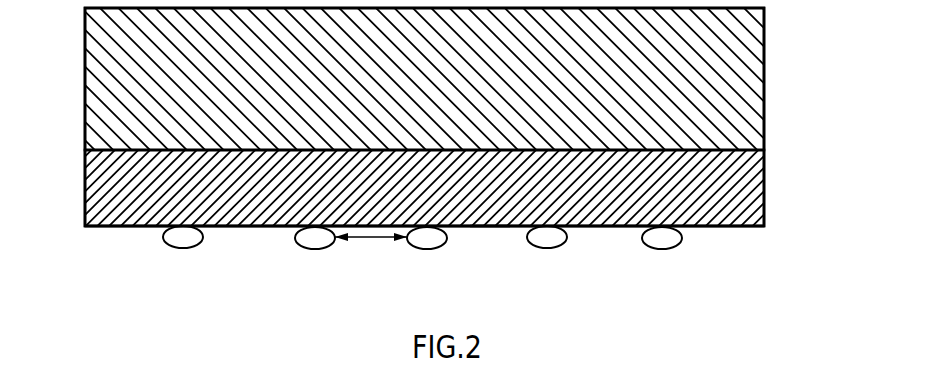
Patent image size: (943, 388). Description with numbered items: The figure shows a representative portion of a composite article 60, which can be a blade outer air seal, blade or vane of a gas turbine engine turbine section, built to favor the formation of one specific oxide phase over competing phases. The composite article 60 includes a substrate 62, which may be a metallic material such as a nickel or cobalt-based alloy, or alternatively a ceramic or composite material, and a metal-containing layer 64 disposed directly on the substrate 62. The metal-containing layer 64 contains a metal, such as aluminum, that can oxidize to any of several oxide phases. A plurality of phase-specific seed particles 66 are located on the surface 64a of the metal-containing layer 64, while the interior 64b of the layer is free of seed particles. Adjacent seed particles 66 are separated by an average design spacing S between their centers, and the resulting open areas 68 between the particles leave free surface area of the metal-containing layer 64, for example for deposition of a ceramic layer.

The composite article 60 is at (798, 178).
The substrate 62 is at (764, 87).
The metal-containing layer 64 is at (764, 172).
The surface 64a is at (730, 227).
The interior 64b is at (118, 198).
The phase-specific seed particles 66 is at (555, 249).
The open areas 68 is at (489, 247).
The average design spacing S is at (372, 240).